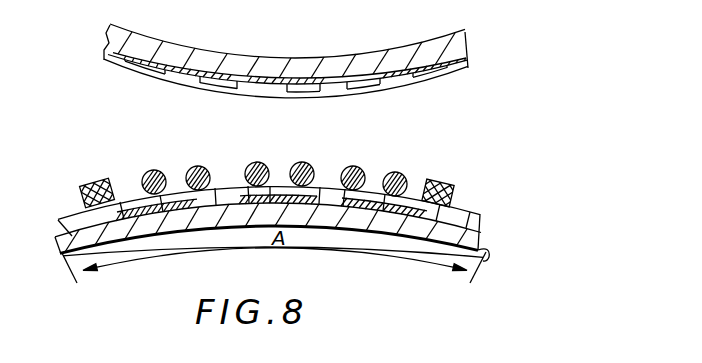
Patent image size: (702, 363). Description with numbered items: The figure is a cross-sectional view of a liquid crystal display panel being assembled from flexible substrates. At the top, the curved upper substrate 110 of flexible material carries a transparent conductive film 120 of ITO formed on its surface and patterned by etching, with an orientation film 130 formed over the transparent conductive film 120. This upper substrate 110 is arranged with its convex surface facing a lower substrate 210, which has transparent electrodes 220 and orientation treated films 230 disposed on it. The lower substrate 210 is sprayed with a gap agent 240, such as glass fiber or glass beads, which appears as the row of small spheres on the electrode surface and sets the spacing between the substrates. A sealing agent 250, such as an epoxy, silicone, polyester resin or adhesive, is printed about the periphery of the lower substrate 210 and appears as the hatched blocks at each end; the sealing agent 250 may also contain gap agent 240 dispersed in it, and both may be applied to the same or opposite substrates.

The substrate 110 is at (458, 46).
The transparent conductive film 120 is at (446, 70).
The orientation film 130 is at (388, 84).
The lower substrate 210 is at (486, 247).
The transparent electrodes 220 is at (464, 213).
The orientation treated films 230 is at (370, 184).
The gap agent 240 is at (303, 163).
The sealing agent 250 is at (112, 182).